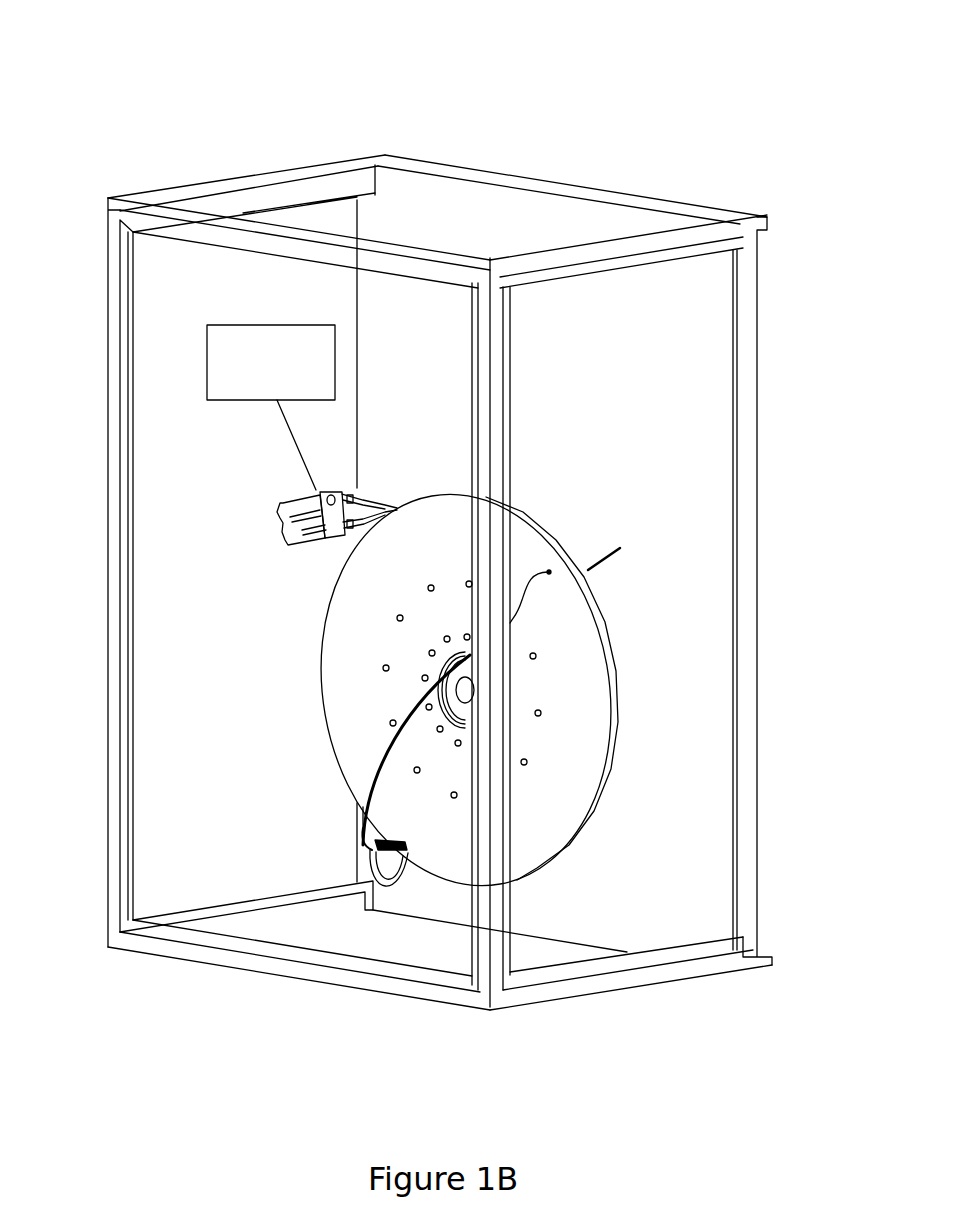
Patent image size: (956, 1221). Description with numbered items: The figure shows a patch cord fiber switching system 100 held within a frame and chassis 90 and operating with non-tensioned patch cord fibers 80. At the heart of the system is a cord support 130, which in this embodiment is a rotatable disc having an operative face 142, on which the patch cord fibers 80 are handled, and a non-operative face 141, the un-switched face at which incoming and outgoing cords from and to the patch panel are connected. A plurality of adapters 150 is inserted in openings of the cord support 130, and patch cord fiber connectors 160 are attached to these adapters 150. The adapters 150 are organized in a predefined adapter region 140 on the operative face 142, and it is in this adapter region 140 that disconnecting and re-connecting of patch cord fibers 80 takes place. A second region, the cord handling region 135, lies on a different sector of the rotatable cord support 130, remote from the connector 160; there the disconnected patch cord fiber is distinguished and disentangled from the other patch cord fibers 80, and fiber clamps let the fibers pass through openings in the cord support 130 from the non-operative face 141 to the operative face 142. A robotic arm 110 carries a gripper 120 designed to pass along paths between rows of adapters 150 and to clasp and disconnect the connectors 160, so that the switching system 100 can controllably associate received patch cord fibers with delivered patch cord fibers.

The patch cord fiber switching system 100 is at (75, 54).
The frame and chassis 90 is at (108, 485).
The robotic arm 110 is at (242, 325).
The gripper 120 is at (356, 548).
The cord support 130 is at (600, 768).
The cord handling region 135 is at (543, 598).
The non-operative face 141 is at (627, 658).
The operative face 142 is at (572, 726).
The adapter region 140 is at (428, 843).
The adapter 150 is at (396, 885).
The patch cord fiber connector 160 is at (367, 883).
The patch cord fiber 80 is at (378, 775).